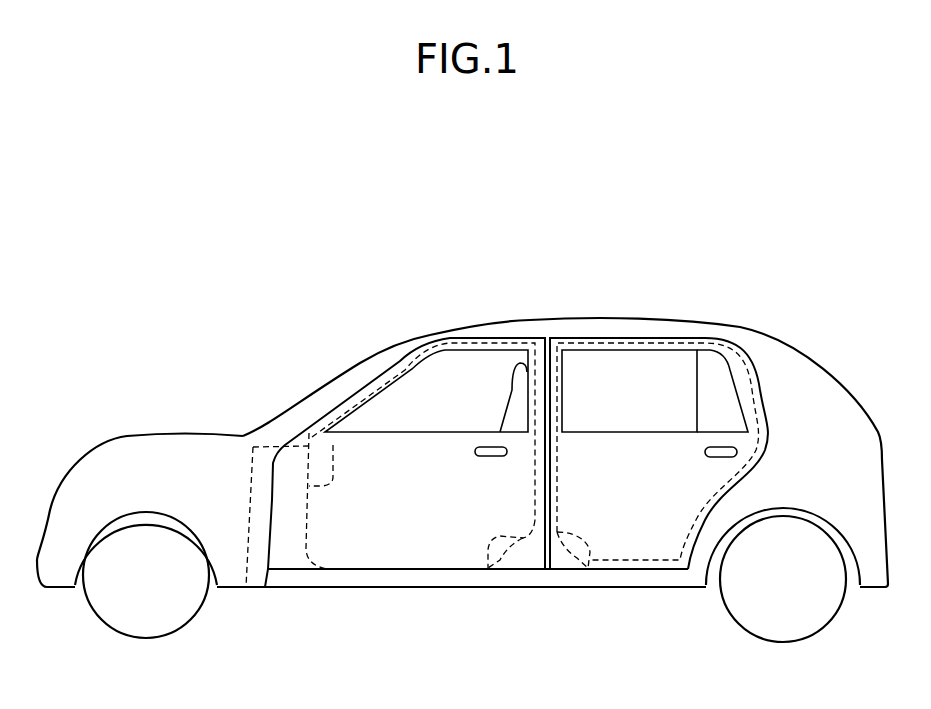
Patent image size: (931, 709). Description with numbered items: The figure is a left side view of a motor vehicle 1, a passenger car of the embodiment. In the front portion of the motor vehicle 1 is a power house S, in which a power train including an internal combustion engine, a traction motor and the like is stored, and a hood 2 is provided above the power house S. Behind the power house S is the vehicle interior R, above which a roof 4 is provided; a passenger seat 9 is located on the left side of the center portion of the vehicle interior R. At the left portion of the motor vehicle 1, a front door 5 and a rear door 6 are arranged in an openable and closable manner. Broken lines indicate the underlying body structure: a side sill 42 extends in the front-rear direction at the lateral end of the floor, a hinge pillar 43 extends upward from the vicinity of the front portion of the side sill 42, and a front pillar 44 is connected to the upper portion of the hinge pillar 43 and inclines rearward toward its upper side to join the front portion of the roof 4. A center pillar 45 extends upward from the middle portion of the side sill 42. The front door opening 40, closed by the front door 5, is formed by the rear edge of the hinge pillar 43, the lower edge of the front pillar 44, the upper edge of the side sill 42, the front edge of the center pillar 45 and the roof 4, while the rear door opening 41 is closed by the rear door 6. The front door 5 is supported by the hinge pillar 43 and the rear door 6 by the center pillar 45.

The motor vehicle 1 is at (675, 318).
The hood 2 is at (127, 437).
The power house S is at (203, 467).
The roof 4 is at (425, 335).
The front pillar 44 is at (360, 365).
The hinge pillar 43 is at (333, 445).
The side sill 42 is at (311, 580).
The front door 5 is at (383, 530).
The passenger seat 9 is at (520, 360).
The vehicle interior R is at (485, 373).
The front door opening 40 is at (488, 568).
The rear door opening 41 is at (588, 568).
The rear door 6 is at (643, 522).
The center pillar 45 is at (562, 402).